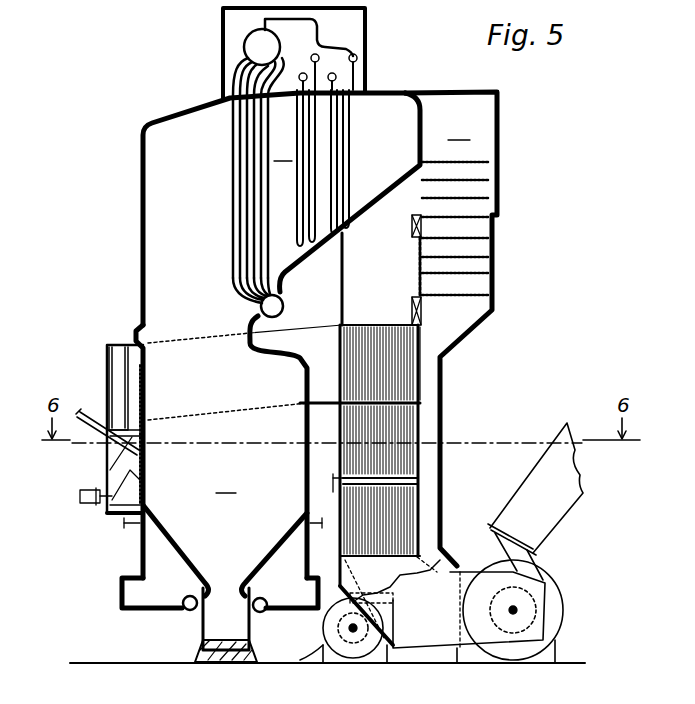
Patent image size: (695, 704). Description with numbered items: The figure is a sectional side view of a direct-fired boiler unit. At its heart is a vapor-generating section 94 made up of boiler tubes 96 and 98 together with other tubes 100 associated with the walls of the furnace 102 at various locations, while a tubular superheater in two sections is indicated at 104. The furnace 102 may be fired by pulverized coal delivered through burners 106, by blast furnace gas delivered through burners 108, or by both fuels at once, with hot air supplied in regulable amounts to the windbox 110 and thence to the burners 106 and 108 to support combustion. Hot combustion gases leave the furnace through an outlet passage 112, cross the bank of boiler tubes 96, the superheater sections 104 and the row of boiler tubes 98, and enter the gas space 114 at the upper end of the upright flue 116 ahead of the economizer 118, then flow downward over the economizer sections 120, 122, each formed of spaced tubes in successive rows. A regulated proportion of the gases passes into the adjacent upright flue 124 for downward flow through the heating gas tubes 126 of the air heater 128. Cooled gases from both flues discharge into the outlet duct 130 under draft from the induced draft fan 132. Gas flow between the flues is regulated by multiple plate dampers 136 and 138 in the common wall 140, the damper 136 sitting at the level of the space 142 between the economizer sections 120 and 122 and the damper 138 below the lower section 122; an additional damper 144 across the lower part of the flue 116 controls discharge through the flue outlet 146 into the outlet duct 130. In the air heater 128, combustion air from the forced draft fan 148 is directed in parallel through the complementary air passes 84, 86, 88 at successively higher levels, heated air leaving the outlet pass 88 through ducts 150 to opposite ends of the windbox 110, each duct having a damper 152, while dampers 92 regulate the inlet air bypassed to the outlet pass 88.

The air pass 84 is at (380, 521).
The air pass 86 is at (378, 363).
The outlet pass 88 is at (284, 438).
The damper 92 is at (405, 482).
The vapor-generating section 94 is at (235, 172).
The boiler tubes 96 is at (248, 216).
The boiler tubes 98 is at (416, 124).
The tubes 100 is at (147, 390).
The furnace 102 is at (222, 568).
The tubular superheater 104 is at (312, 186).
The burners 106 is at (110, 461).
The burners 108 is at (80, 496).
The windbox 110 is at (110, 518).
The outlet passage 112 is at (295, 150).
The gas space 114 is at (448, 135).
The upright flue 116 is at (500, 124).
The economizer 118 is at (468, 176).
The economizer section 120 is at (456, 190).
The economizer section 122 is at (456, 277).
The upright flue 124 is at (417, 250).
The heating gas tubes 126 is at (345, 345).
The air heater 128 is at (420, 393).
The outlet duct 130 is at (457, 572).
The induced draft fan 132 is at (558, 600).
The multiple plate damper 136 is at (411, 228).
The multiple plate damper 138 is at (411, 307).
The common wall 140 is at (418, 279).
The space 142 is at (478, 232).
The damper 144 is at (430, 553).
The flue outlet 146 is at (415, 570).
The forced draft fan 148 is at (330, 642).
The ducts 150 is at (107, 354).
The damper 152 is at (107, 412).